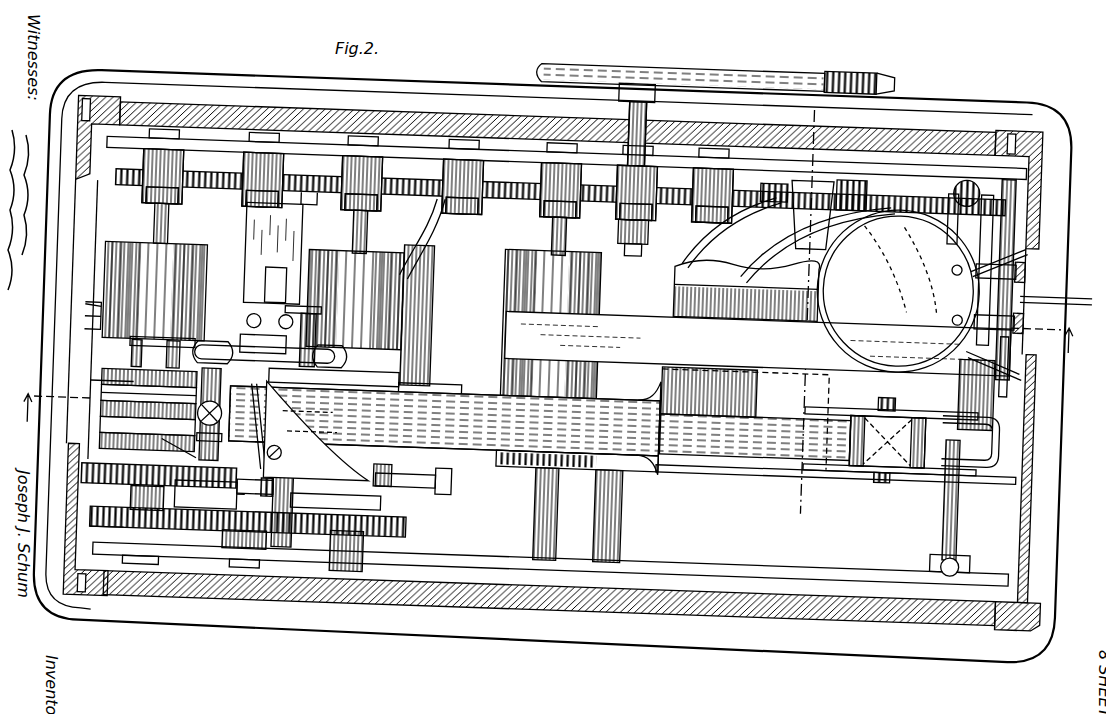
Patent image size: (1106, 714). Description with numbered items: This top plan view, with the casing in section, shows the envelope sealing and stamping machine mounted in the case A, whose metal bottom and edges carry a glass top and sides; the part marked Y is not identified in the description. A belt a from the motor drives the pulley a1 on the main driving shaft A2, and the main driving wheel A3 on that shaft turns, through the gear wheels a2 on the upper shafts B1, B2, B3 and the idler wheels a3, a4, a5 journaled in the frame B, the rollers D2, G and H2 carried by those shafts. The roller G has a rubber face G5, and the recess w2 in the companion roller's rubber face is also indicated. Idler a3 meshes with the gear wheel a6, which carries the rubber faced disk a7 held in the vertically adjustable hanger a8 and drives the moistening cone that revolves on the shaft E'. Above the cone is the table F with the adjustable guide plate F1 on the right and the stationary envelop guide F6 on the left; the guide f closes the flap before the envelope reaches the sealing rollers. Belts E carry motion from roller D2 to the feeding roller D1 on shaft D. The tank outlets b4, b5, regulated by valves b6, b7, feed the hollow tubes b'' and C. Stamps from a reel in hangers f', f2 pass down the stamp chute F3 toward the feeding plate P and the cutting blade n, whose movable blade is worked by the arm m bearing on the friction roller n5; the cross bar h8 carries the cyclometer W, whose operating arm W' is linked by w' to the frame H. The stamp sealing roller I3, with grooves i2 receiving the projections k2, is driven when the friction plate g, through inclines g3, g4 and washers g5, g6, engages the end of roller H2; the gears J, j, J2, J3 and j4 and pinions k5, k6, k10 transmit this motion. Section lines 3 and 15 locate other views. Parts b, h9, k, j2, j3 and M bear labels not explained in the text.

The case A is at (849, 604).
The casing inner wall Y is at (78, 237).
The section line 15— 15 is at (806, 309).
The gear wheel a2 is at (212, 186).
The pulley a1 is at (638, 70).
The belt a is at (780, 74).
The main driving shaft A2 is at (621, 108).
The main driving wheel A3 is at (643, 222).
The upper revoluble shaft B3 is at (151, 220).
The idler wheel a5 is at (243, 206).
The upper revoluble shaft B2 is at (363, 220).
The idler wheel a4 is at (478, 199).
The upper revoluble shaft B1 is at (563, 233).
The roller D2 is at (600, 271).
The frame B is at (605, 353).
The idler wheel a3 is at (762, 189).
The hanger a8 is at (812, 214).
The rubber faced disk a7 is at (855, 187).
The gear wheel a6 is at (864, 198).
The platform or table F is at (750, 258).
The belts E is at (758, 343).
The dial wheel b is at (898, 291).
The tank outlet b4 is at (951, 254).
The tank outlet b5 is at (951, 309).
The hollow tube b'' is at (997, 280).
The valve b6 is at (1024, 254).
The valve b7 is at (1022, 303).
The hollow tube C is at (1006, 338).
The section line 3— 3 is at (548, 374).
The roller H2 is at (205, 257).
The cross bar h8 is at (280, 247).
The cyclometer W is at (256, 287).
The operating arm W' is at (300, 305).
The link w' is at (325, 340).
The frame H is at (255, 352).
The roller G is at (397, 316).
The arm h9 is at (433, 293).
The rubber face G5 is at (412, 384).
The recess w2 is at (440, 384).
The stamp chute F3 is at (444, 421).
The flap guide f is at (579, 416).
The stamp sealing roller I3 is at (103, 445).
The grooves i2 is at (103, 407).
The post k is at (222, 418).
The circumferential projections k2 is at (218, 439).
The pinion k10 is at (176, 468).
The gear wheel J2 is at (126, 470).
The gear wheel J3 is at (92, 396).
The small gear j is at (122, 524).
The large gear J is at (219, 501).
The bar j3 is at (120, 541).
The third gear j4 is at (229, 544).
The cylinder j2 is at (350, 545).
The gear wheel k5 is at (205, 494).
The gear wheel k6 is at (228, 499).
The stationary cutting blade n is at (267, 427).
The friction roller n5 is at (254, 498).
The feeding plate P is at (317, 431).
The arm m is at (335, 505).
The handle M is at (410, 498).
The friction plate g is at (84, 344).
The incline g3 is at (175, 363).
The incline g4 is at (130, 358).
The washer g5 is at (84, 320).
The washer g6 is at (84, 332).
The shaft E' is at (755, 419).
The stationary envelop guide F6 is at (736, 464).
The guide plate F1 is at (884, 455).
The hanger f' is at (910, 391).
The hanger f2 is at (934, 466).
The shaft D is at (962, 493).
The feeding roller D1 is at (1016, 420).